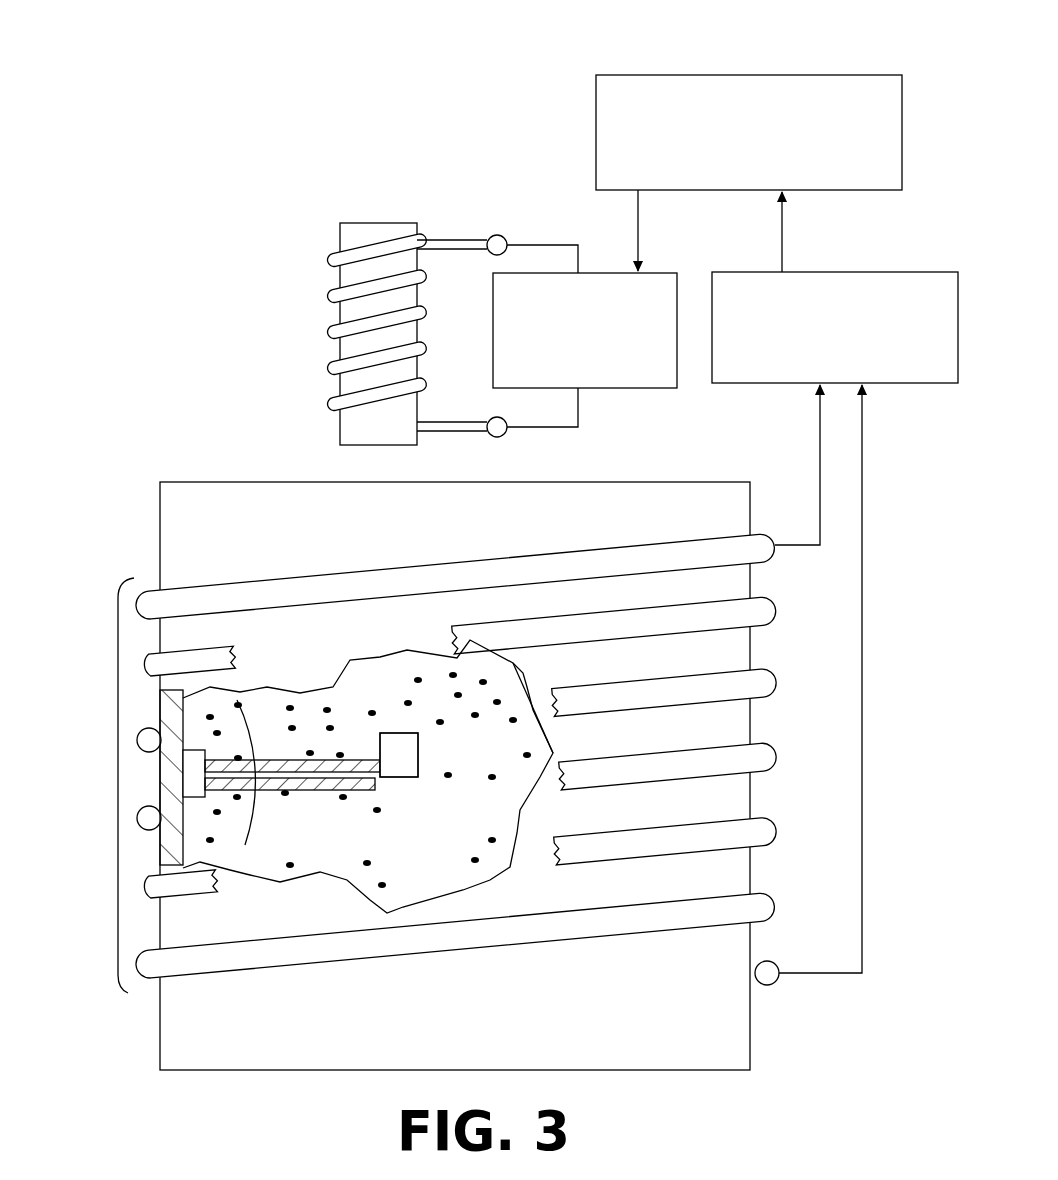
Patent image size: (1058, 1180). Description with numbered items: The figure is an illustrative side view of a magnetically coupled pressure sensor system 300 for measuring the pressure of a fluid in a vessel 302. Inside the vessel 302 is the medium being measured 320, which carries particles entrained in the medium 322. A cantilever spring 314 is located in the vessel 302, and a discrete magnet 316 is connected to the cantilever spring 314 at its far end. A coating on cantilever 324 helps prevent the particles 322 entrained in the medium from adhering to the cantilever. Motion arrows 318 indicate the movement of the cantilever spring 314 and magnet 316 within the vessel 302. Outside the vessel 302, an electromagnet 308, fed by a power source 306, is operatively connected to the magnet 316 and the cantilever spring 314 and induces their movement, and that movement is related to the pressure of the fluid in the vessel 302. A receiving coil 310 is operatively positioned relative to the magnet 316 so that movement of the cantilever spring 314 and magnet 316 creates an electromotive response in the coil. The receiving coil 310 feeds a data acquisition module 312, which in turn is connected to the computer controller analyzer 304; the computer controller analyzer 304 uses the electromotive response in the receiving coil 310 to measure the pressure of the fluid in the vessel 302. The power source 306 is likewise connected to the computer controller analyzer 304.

The magnetically coupled pressure sensor system 300 is at (308, 160).
The vessel 302 is at (292, 544).
The computer controller analyzer 304 is at (755, 75).
The power source 306 is at (622, 390).
The electromagnet 308 is at (400, 223).
The receiving coil 310 is at (112, 788).
The data acquisition module 312 is at (850, 272).
The cantilever spring 314 is at (418, 778).
The magnet 316 is at (420, 752).
The motion arrows 318 is at (247, 853).
The medium being measured 320 is at (458, 878).
The particles entrained in the medium 322 is at (458, 674).
The coating on cantilever 324 is at (325, 792).